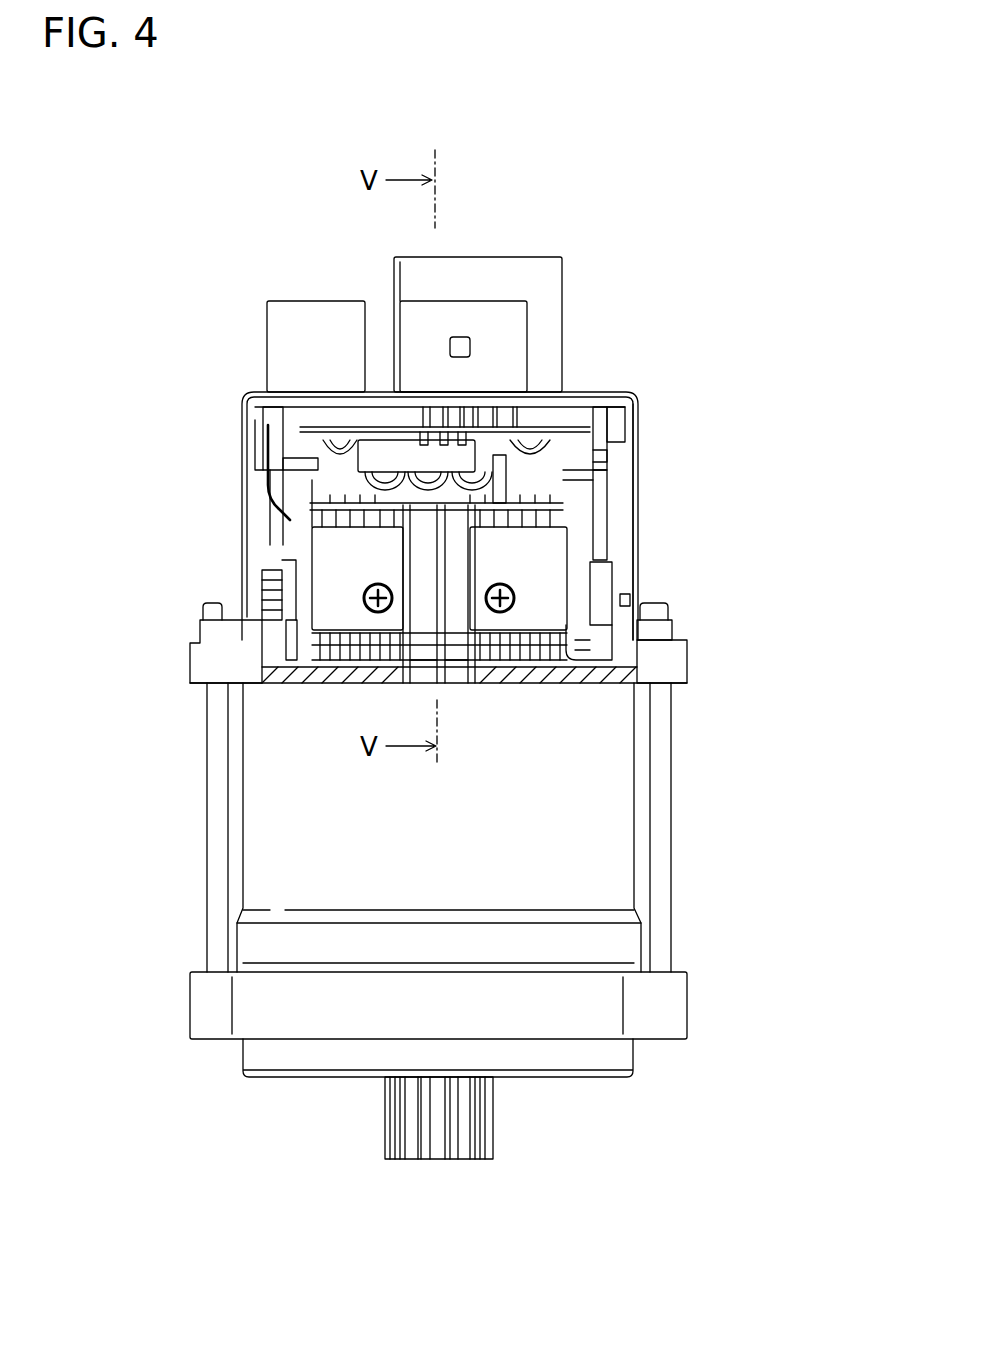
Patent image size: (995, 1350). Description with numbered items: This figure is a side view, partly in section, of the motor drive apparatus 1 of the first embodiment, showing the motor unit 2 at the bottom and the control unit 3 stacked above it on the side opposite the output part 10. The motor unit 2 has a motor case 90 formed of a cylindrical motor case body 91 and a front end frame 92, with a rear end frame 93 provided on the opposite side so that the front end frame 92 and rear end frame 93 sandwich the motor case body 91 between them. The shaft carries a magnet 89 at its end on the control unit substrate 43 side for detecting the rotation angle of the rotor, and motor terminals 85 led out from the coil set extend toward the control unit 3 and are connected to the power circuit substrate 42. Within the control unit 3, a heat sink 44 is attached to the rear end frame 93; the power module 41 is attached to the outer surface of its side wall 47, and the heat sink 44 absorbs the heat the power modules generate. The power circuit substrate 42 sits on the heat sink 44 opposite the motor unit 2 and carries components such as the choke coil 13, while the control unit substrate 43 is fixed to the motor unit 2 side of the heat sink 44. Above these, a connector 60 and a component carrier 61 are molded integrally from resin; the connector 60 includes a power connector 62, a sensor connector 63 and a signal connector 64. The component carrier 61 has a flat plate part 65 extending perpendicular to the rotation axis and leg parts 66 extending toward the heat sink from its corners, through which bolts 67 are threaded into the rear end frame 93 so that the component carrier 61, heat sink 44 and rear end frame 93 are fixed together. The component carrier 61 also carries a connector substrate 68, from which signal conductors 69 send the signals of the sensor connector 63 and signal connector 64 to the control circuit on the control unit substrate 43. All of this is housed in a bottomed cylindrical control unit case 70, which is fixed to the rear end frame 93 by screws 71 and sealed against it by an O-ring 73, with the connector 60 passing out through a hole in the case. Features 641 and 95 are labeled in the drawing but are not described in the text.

The motor device 1 is at (203, 227).
The motor unit 2 is at (732, 894).
The control unit 3 is at (752, 487).
The output part 10 is at (473, 1160).
The choke coil 13 is at (392, 488).
The power module 41 is at (340, 548).
The power circuit substrate 42 is at (512, 490).
The control unit substrate 43 is at (640, 658).
The heat sink 44 is at (268, 582).
The side wall 47 is at (268, 582).
The connector 60 is at (615, 171).
The component carrier 61 is at (744, 335).
The power connector 62 is at (556, 318).
The sensor connector 63 is at (347, 315).
The signal connector 64 is at (499, 320).
The connector board 641 is at (400, 430).
The flat plate part 65 is at (578, 392).
The leg parts 66 is at (608, 480).
The bolts 67 is at (597, 448).
The connector substrate 68 is at (298, 462).
The signal conductors 69 is at (258, 513).
The control unit case 70 is at (637, 528).
The screws 71 is at (678, 628).
The O-ring 73 is at (242, 597).
The motor terminals 85 is at (620, 574).
The magnet 89 is at (470, 688).
The motor case 90 is at (101, 1012).
The motor case body 91 is at (260, 788).
The front end frame 92 is at (205, 998).
The rear end frame 93 is at (205, 667).
The bolt post 95 is at (215, 878).